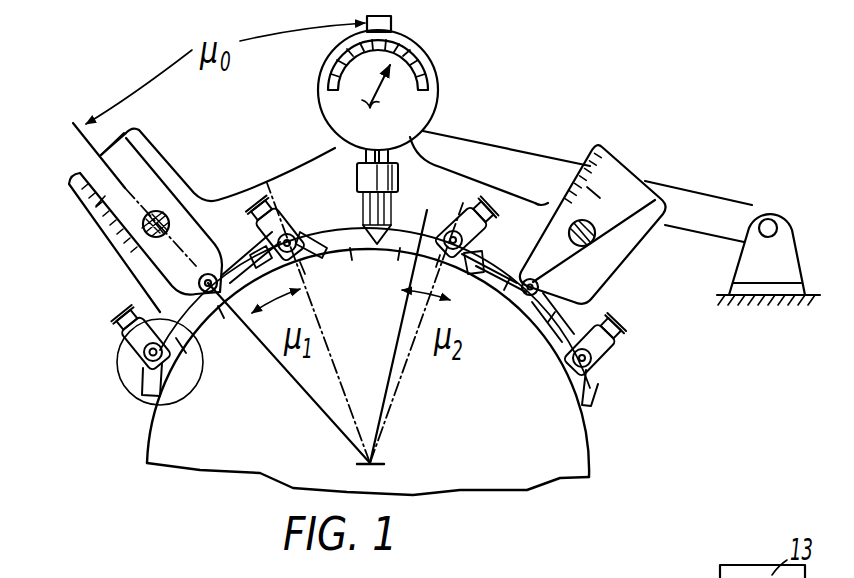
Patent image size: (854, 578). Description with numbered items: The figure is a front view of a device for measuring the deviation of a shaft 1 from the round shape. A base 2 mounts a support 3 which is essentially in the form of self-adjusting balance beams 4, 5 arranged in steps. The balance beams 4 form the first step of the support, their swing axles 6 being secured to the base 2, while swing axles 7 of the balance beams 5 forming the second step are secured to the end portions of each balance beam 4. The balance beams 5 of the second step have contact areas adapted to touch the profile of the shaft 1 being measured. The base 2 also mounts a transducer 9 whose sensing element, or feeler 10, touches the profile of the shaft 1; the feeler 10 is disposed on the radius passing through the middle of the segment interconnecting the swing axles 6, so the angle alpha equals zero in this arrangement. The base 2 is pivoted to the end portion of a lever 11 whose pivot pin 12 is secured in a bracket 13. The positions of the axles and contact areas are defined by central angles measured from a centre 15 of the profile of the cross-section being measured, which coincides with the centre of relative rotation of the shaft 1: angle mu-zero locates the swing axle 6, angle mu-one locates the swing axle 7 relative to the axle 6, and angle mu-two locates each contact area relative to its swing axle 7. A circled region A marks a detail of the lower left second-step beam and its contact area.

The shaft 1 is at (577, 452).
The base 2 is at (298, 182).
The support 3 is at (156, 302).
The balance beam of the first step 4 is at (499, 256).
The balance beam of the second step 5 is at (597, 398).
The swing axle of the balance beam of the first step 6 is at (580, 285).
The swing axle of the balance beam of the second step 7 is at (606, 361).
The transducer 9 is at (430, 101).
The sensing element (feeler) 10 is at (390, 240).
The lever 11 is at (700, 200).
The pivot pin 12 is at (772, 222).
The bracket 13 is at (758, 292).
The centre of the profile of the cross-section 15 is at (377, 459).
The detail region A is at (122, 383).